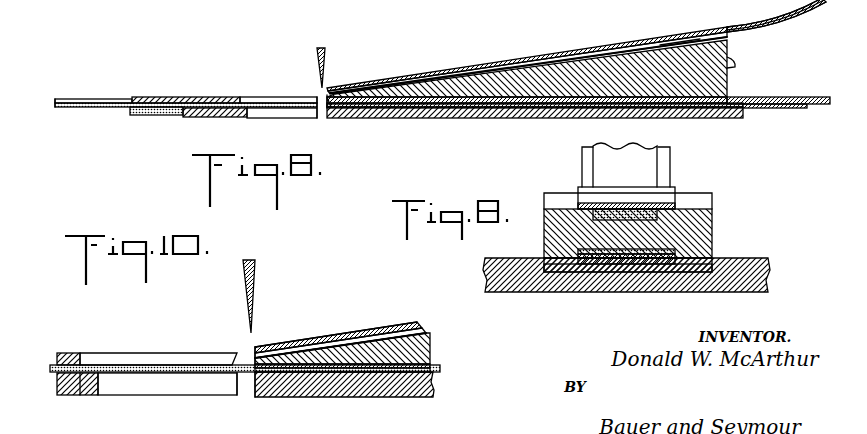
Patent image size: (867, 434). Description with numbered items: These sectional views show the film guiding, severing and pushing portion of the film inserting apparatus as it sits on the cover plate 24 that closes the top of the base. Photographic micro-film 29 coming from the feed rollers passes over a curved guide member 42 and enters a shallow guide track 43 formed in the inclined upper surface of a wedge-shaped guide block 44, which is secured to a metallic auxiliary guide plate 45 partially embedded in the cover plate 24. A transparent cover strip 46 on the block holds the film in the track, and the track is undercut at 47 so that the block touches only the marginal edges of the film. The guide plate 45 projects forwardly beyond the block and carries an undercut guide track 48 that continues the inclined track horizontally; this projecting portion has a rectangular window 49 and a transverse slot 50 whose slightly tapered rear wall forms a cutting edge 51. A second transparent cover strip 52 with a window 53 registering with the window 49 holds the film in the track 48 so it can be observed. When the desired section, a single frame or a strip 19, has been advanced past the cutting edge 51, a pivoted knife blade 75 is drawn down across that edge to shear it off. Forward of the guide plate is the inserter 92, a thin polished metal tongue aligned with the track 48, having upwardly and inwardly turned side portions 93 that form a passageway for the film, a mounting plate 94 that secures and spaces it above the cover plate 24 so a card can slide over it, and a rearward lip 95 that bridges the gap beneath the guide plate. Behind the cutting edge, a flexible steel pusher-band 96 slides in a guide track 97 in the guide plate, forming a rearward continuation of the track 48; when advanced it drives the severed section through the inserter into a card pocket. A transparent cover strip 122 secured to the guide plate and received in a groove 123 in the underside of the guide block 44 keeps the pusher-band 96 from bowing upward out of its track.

In FIG. 10, the film strip 19 is at (152, 372).
In FIG. 8, the cover plate 24 is at (672, 38).
In FIG. 9, the cover plate 24 is at (752, 276).
In FIG. 8, the photographic micro-film 29 is at (775, 18).
In FIG. 9, the photographic micro-film 29 is at (647, 146).
In FIG. 10, the photographic micro-film 29 is at (425, 325).
In FIG. 8, the curved guide member 42 is at (796, 18).
In FIG. 9, the curved guide member 42 is at (670, 165).
In FIG. 8, the guide track 43 is at (508, 68).
In FIG. 9, the guide track 43 is at (657, 216).
In FIG. 10, the guide track 43 is at (332, 347).
In FIG. 8, the wedge-shaped guide block 44 is at (552, 70).
In FIG. 9, the wedge-shaped guide block 44 is at (700, 240).
In FIG. 10, the wedge-shaped guide block 44 is at (420, 352).
In FIG. 8, the auxiliary guide plate 45 is at (452, 118).
In FIG. 9, the auxiliary guide plate 45 is at (700, 280).
In FIG. 10, the auxiliary guide plate 45 is at (405, 386).
In FIG. 8, the cover strip 46 is at (596, 51).
In FIG. 9, the cover strip 46 is at (660, 196).
In FIG. 10, the cover strip 46 is at (363, 335).
In FIG. 8, the undercut 47 is at (645, 50).
In FIG. 9, the undercut 47 is at (604, 218).
In FIG. 10, the undercut 47 is at (290, 357).
In FIG. 8, the guide track 48 is at (218, 117).
In FIG. 10, the guide track 48 is at (80, 395).
In FIG. 8, the window 49 is at (270, 118).
In FIG. 10, the window 49 is at (190, 386).
In FIG. 8, the slot 50 is at (321, 110).
In FIG. 10, the slot 50 is at (246, 386).
In FIG. 8, the cutting edge 51 is at (333, 108).
In FIG. 10, the cutting edge 51 is at (258, 380).
In FIG. 8, the cover strip 52 is at (166, 97).
In FIG. 10, the cover strip 52 is at (75, 353).
In FIG. 8, the window 53 is at (268, 97).
In FIG. 10, the window 53 is at (157, 353).
In FIG. 8, the knife blade 75 is at (325, 66).
In FIG. 10, the knife blade 75 is at (256, 290).
In FIG. 8, the inserter 92 is at (66, 107).
In FIG. 8, the upwardly and inwardly turned portions 93 is at (90, 99).
In FIG. 8, the mounting plate 94 is at (112, 107).
In FIG. 8, the lip 95 is at (162, 115).
In FIG. 8, the pusher member 96 is at (796, 108).
In FIG. 9, the pusher member 96 is at (655, 266).
In FIG. 10, the pusher member 96 is at (370, 380).
In FIG. 8, the guide track 97 is at (380, 107).
In FIG. 9, the guide track 97 is at (612, 262).
In FIG. 10, the guide track 97 is at (325, 372).
In FIG. 8, the cover strip 122 is at (778, 97).
In FIG. 9, the cover strip 122 is at (650, 262).
In FIG. 8, the groove 123 is at (452, 98).
In FIG. 9, the groove 123 is at (584, 272).